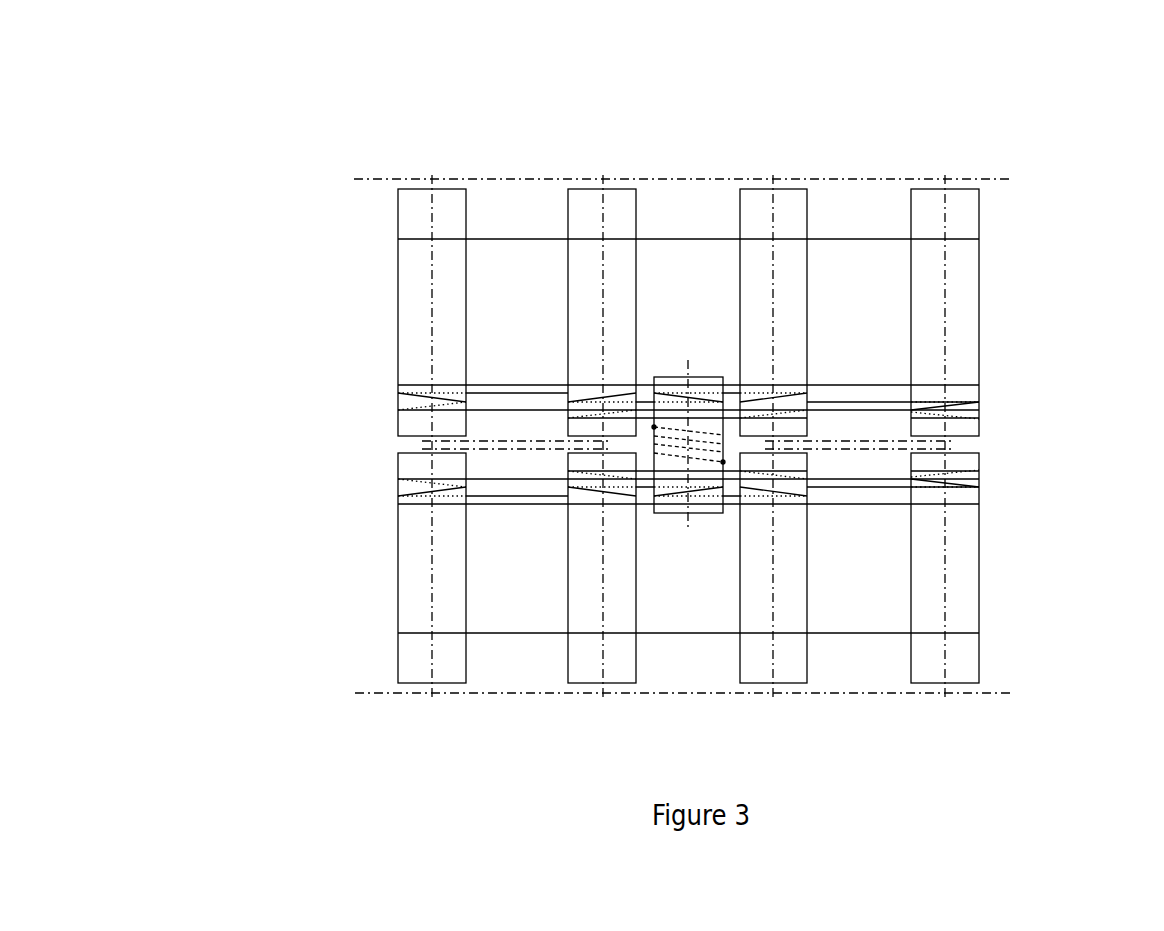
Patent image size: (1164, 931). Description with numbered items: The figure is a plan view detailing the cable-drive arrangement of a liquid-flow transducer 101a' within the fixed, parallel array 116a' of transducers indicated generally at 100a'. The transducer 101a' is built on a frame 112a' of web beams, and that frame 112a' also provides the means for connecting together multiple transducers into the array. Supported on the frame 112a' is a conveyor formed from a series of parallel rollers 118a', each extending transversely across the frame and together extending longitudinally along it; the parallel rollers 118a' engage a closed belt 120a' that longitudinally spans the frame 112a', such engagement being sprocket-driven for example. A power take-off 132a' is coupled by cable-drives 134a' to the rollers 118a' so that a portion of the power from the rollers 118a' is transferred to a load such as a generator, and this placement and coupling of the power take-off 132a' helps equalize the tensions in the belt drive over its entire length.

The connector assembly 100a' is at (661, 418).
The coupling body 116a' is at (626, 418).
The frame 112a' is at (649, 443).
The closed belt 120a' is at (688, 444).
The parallel rollers 118a' is at (727, 423).
The cable-drives 134a' is at (741, 455).
The power take-off 132a' is at (686, 559).
The liquid-flow transducer 101a' is at (242, 434).